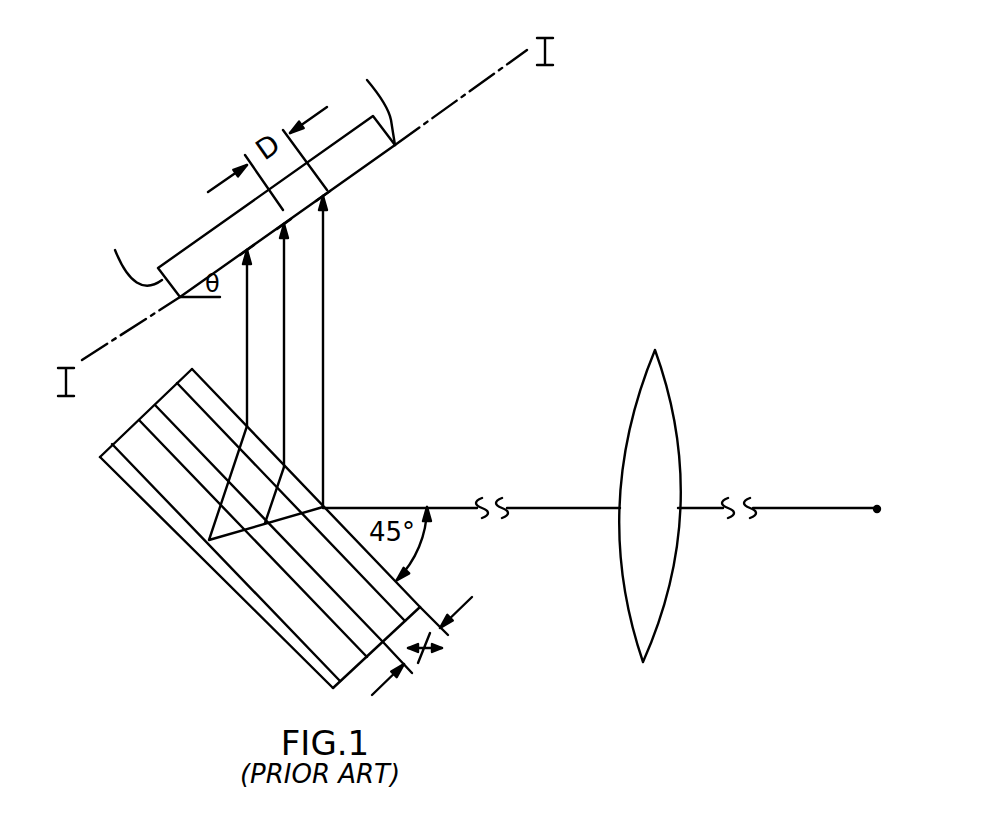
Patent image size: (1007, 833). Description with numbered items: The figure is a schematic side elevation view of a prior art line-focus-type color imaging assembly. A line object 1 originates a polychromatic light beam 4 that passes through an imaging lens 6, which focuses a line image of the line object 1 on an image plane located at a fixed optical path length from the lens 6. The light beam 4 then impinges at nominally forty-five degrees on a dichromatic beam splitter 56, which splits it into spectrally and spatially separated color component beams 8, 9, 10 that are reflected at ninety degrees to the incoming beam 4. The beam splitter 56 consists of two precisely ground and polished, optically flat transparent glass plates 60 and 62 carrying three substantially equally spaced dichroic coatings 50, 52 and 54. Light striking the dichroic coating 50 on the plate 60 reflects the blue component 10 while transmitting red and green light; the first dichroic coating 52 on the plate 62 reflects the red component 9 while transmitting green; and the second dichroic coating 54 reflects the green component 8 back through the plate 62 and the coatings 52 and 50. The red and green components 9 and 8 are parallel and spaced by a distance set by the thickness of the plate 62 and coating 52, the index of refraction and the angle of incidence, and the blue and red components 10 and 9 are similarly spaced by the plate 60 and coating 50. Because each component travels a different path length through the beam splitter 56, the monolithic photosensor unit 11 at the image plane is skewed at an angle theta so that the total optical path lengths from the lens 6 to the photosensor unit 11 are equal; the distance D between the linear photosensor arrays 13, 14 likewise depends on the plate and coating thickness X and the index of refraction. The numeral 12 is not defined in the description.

The line object 1 is at (877, 514).
The polychromatic light beam 4 is at (787, 507).
The imaging lens 6 is at (673, 403).
The green color component beam 8 is at (248, 385).
The red color component beam 9 is at (291, 400).
The blue color component beam 10 is at (325, 383).
The monolithic photosensor unit 11 is at (380, 171).
The beam spot 12 is at (249, 250).
The linear photosensor array 13 is at (297, 223).
The linear photosensor array 14 is at (333, 191).
The dichroic coating 50 is at (187, 384).
The first dichroic coating 52 is at (174, 438).
The second dichroic coating 54 is at (113, 467).
The dichromatic beam splitter 56 is at (205, 575).
The glass plate 60 is at (168, 397).
The glass plate 62 is at (127, 445).